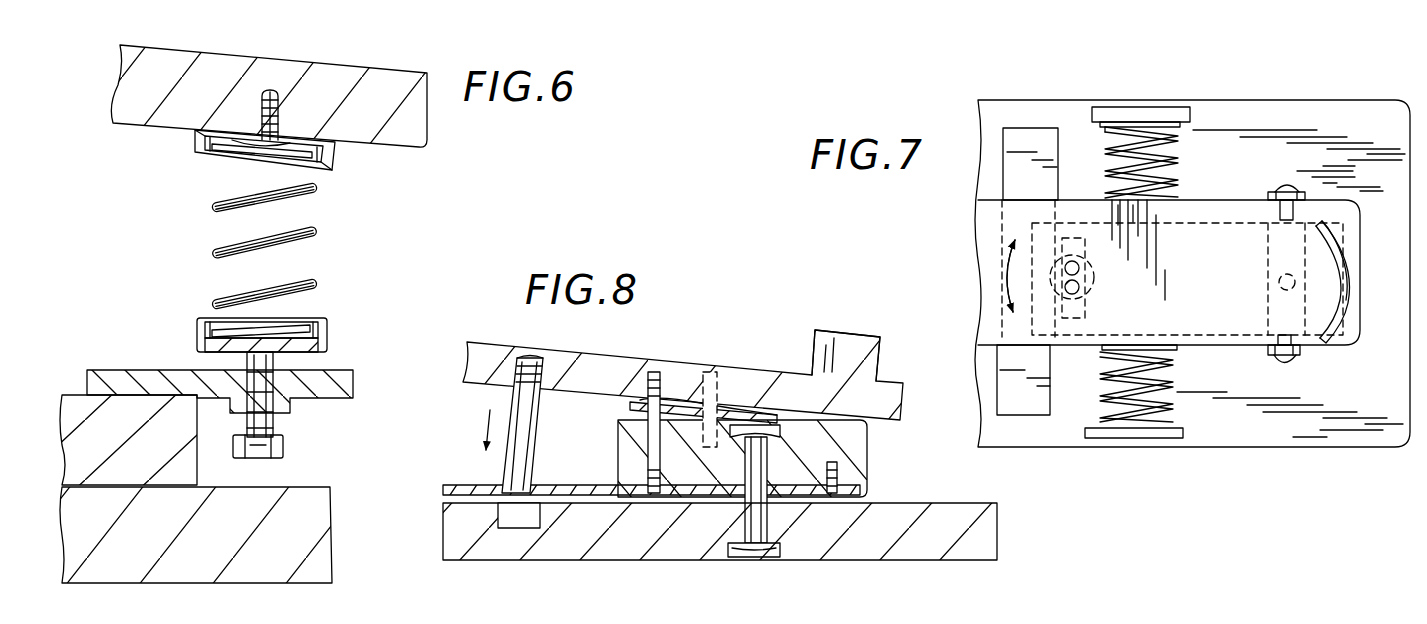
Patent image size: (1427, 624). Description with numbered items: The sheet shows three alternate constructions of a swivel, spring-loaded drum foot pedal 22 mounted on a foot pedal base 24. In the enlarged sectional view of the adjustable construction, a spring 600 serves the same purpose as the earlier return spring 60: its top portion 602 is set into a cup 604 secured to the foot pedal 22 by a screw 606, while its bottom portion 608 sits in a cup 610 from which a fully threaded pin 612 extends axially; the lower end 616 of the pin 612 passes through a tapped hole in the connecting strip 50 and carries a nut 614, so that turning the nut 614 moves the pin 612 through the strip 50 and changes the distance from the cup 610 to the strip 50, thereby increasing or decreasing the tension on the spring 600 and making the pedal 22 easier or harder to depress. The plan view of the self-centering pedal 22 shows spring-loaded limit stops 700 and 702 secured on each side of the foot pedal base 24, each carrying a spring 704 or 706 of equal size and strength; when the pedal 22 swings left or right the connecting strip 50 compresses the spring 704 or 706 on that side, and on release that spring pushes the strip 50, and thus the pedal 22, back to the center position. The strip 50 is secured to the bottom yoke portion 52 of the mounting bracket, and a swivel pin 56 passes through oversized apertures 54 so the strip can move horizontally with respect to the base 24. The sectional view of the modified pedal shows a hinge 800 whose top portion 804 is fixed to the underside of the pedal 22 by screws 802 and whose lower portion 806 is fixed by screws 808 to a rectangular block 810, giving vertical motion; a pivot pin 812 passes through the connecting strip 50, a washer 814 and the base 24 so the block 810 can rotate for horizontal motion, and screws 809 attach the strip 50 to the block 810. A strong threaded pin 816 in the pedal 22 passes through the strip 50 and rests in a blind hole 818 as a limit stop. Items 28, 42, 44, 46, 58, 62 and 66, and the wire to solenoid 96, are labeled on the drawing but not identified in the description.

In FIG. 6, the foot pedal 22 is at (413, 123).
In FIG. 8, the foot pedal 22 is at (885, 405).
In FIG. 7, the foot pedal 22 is at (1358, 212).
In FIG. 6, the foot pedal base 24 is at (315, 540).
In FIG. 8, the foot pedal base 24 is at (985, 537).
In FIG. 7, the foot pedal base 24 is at (1392, 403).
In FIG. 8, the cam block 28 is at (826, 345).
In FIG. 7, the cam block 28 is at (1349, 280).
In FIG. 7, the lower pin 42 is at (1268, 356).
In FIG. 7, the upper pin 44 is at (1268, 194).
In FIG. 7, the pin head 46 is at (1283, 186).
In FIG. 6, the connecting strip 50 is at (353, 395).
In FIG. 8, the connecting strip 50 is at (448, 483).
In FIG. 7, the connecting strip 50 is at (1190, 260).
In FIG. 7, the bottom yoke portion 52 is at (1270, 240).
In FIG. 7, the apertures 54 is at (1298, 285).
In FIG. 7, the swivel pin 56 is at (1278, 282).
In FIG. 6, the block 58 is at (135, 460).
In FIG. 7, the block 58 is at (1047, 411).
In FIG. 7, the return spring 60 is at (1080, 287).
In FIG. 7, the recess 62 is at (1074, 320).
In FIG. 7, the hole 66 is at (1080, 268).
In FIG. 7, the wire to solenoid 96 is at (1207, 614).
In FIG. 6, the spring 600 is at (322, 248).
In FIG. 6, the top portion of spring 602 is at (222, 168).
In FIG. 6, the cup 604 is at (340, 165).
In FIG. 6, the screw 606 is at (279, 103).
In FIG. 6, the bottom portion of spring 608 is at (305, 325).
In FIG. 6, the cup 610 is at (335, 335).
In FIG. 6, the pin 612 is at (275, 366).
In FIG. 6, the nut 614 is at (285, 450).
In FIG. 6, the lower end of pin 616 is at (276, 420).
In FIG. 7, the limit stop 700 is at (1191, 113).
In FIG. 7, the limit stop 702 is at (1184, 438).
In FIG. 7, the spring 704 is at (1160, 163).
In FIG. 7, the spring 706 is at (1176, 398).
In FIG. 8, the hinge 800 is at (615, 408).
In FIG. 8, the screws 802 is at (703, 402).
In FIG. 8, the top portion of hinge 804 is at (750, 424).
In FIG. 8, the lower portion of hinge 806 is at (681, 430).
In FIG. 8, the screws 808 is at (640, 400).
In FIG. 8, the screws 809 is at (645, 462).
In FIG. 8, the rectangular block 810 is at (855, 440).
In FIG. 8, the pivot pin 812 is at (762, 530).
In FIG. 8, the washer 814 is at (742, 500).
In FIG. 8, the pin 816 is at (531, 470).
In FIG. 8, the blind hole 818 is at (530, 522).